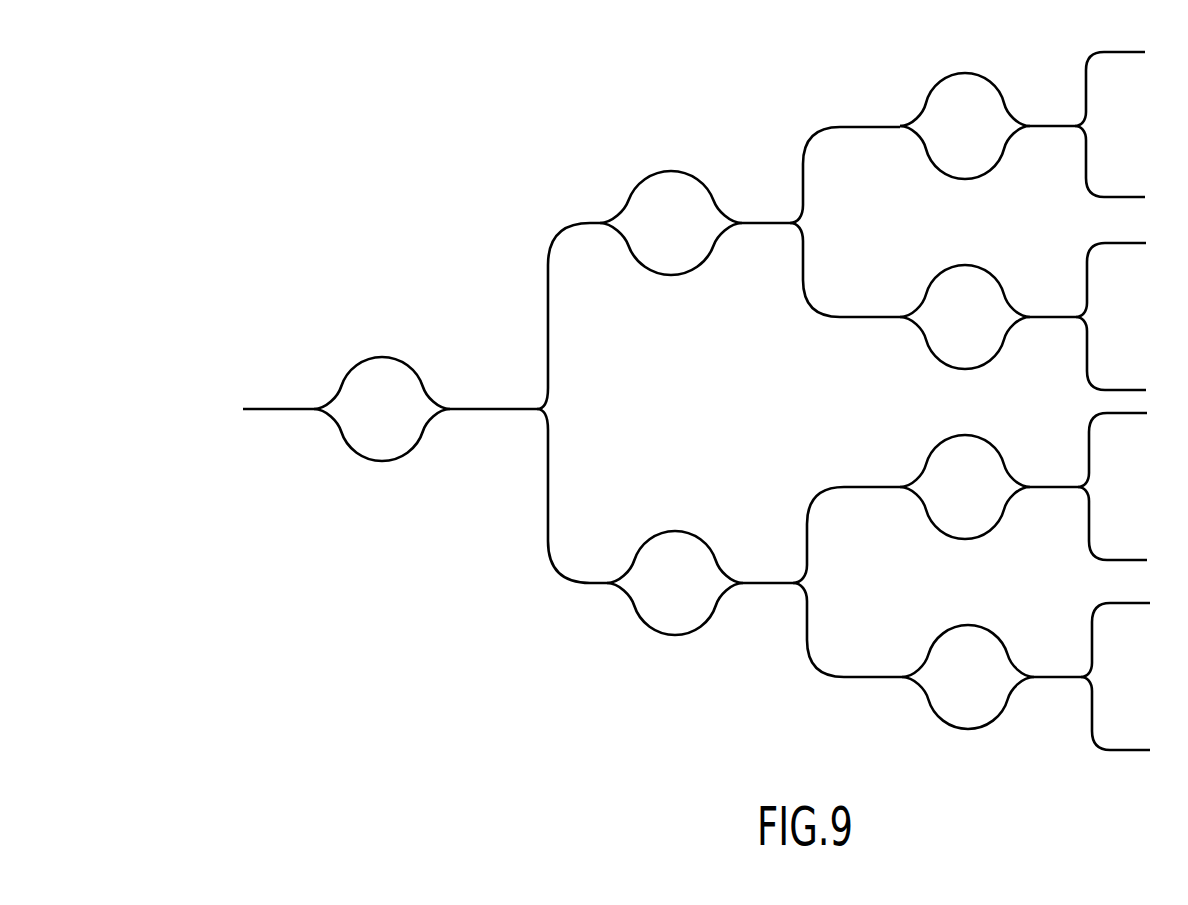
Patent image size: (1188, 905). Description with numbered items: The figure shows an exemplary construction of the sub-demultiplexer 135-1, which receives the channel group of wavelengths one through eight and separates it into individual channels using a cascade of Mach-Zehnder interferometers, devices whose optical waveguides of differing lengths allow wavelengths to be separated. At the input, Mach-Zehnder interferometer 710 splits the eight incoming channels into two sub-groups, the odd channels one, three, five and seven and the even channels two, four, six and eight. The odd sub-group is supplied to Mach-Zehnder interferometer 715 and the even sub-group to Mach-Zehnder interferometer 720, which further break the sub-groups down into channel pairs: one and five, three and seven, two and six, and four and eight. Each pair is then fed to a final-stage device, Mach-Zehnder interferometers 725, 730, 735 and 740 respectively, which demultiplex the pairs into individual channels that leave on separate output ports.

The sub-demultiplexer 135-1 is at (466, 698).
The Mach-Zehnder interferometer 710 is at (379, 486).
The Mach-Zehnder interferometer 715 is at (673, 170).
The Mach-Zehnder interferometer 720 is at (695, 635).
The Mach-Zehnder interferometer 725 is at (962, 70).
The Mach-Zehnder interferometer 730 is at (962, 265).
The Mach-Zehnder interferometer 735 is at (962, 435).
The Mach-Zehnder interferometer 740 is at (965, 623).